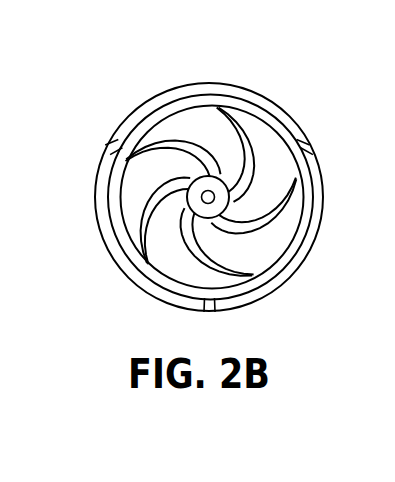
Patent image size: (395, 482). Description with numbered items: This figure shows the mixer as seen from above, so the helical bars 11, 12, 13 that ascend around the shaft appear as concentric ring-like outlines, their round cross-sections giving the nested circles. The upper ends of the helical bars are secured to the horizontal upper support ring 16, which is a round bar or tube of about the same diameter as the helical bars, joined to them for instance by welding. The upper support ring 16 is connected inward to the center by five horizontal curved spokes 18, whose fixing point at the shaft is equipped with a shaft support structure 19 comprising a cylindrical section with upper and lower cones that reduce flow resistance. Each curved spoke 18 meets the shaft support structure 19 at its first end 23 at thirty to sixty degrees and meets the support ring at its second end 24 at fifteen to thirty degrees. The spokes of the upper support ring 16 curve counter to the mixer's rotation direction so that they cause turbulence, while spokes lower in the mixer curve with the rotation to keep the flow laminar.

The helical bar 11 is at (248, 93).
The helical bar 12 is at (292, 275).
The helical bar 13 is at (112, 248).
The upper support ring 16 is at (273, 123).
The curved spoke 18 is at (285, 203).
The shaft support structure 19 is at (196, 181).
The first end 23 is at (213, 167).
The second end 24 is at (126, 136).